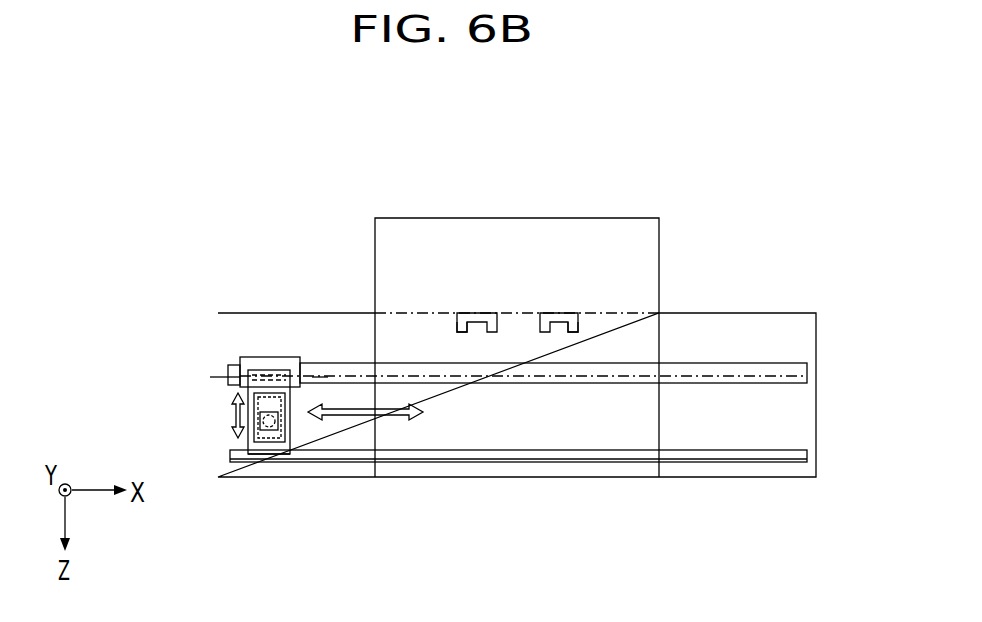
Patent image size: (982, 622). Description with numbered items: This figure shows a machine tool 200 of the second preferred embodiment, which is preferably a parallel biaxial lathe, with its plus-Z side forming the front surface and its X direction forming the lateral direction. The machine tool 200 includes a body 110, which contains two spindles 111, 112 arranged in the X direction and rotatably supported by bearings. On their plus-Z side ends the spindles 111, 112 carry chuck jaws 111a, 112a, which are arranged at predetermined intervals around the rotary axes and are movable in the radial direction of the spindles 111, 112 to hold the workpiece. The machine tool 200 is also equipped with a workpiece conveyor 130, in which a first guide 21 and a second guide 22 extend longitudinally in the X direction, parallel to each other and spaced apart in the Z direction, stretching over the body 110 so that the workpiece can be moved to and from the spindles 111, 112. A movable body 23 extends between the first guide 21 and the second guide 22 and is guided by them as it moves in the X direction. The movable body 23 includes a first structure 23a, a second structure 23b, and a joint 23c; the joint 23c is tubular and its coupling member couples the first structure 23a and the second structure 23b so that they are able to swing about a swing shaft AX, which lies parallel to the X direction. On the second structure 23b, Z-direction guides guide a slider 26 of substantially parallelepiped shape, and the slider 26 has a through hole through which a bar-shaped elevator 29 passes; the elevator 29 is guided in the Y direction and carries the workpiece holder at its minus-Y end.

The machine tool 200 is at (806, 93).
The workpiece conveyor 130 is at (206, 296).
The body 110 is at (672, 220).
The spindle 111 is at (488, 316).
The chuck jaws 111a is at (460, 323).
The spindle 112 is at (547, 312).
The chuck jaws 112a is at (574, 323).
The first guide 21 is at (600, 392).
The second guide 22 is at (502, 470).
The movable body 23 is at (137, 347).
The first structure 23a is at (228, 374).
The joint 23c is at (230, 387).
The second structure 23b is at (248, 450).
The slider 26 is at (277, 455).
The elevator 29 is at (288, 425).
The swing shaft AX is at (317, 373).